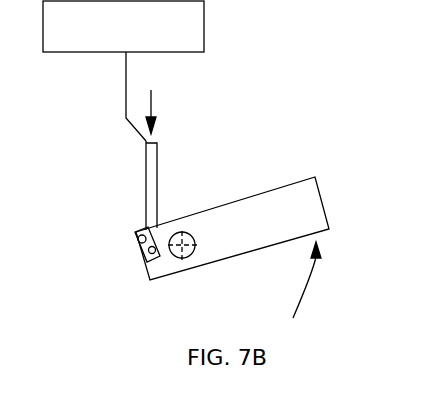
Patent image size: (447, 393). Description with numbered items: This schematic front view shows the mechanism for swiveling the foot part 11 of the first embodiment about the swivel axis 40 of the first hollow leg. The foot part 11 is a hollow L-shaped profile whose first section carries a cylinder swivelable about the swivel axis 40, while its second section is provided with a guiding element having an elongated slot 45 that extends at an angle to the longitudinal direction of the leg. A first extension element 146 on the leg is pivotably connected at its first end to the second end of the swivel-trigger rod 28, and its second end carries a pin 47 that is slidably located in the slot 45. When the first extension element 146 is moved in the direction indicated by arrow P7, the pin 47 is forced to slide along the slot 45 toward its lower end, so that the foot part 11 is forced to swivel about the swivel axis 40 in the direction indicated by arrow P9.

The swivel-trigger rod 28 is at (92, 53).
The first extension element 146 is at (158, 161).
The foot part 11 is at (276, 210).
The swivel axis 40 is at (186, 249).
The pin 47 is at (145, 232).
The elongated slot 45 is at (145, 257).
The arrow P7 is at (153, 104).
The arrow P9 is at (313, 266).